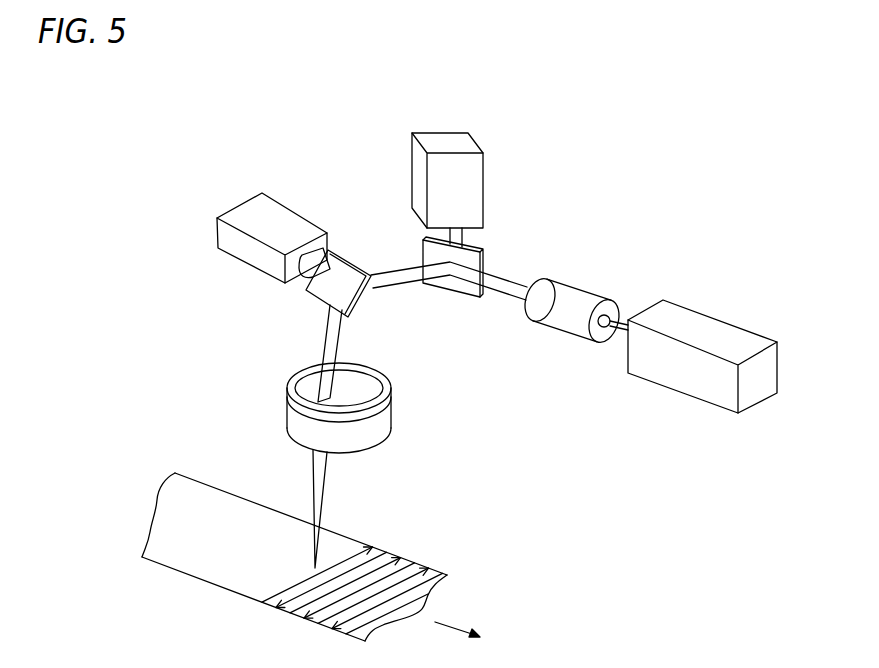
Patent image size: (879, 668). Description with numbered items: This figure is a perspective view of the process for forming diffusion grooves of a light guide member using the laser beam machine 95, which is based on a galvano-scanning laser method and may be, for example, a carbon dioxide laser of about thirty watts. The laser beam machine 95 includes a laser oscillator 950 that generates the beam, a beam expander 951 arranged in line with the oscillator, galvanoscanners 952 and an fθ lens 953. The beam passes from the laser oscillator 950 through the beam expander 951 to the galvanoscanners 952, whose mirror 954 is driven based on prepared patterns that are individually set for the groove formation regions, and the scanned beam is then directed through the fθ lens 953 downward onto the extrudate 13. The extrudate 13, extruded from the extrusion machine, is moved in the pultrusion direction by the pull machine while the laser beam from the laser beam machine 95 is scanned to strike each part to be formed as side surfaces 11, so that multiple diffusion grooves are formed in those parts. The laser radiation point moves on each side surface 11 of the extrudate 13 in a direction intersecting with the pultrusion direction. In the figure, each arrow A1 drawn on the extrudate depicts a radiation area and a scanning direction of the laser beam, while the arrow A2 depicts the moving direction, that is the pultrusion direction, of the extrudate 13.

The laser beam machine 95 is at (699, 303).
The laser oscillator 950 is at (738, 338).
The beam expander 951 is at (572, 297).
The galvanoscanners 952 is at (245, 210).
The fθ lens 953 is at (305, 397).
The mirror 954 is at (455, 288).
The side surfaces 11 is at (238, 508).
The extrudate 13 is at (205, 495).
The arrow depicting radiation area and scanning direction A1 is at (360, 590).
The arrow depicting moving direction A2 is at (457, 614).